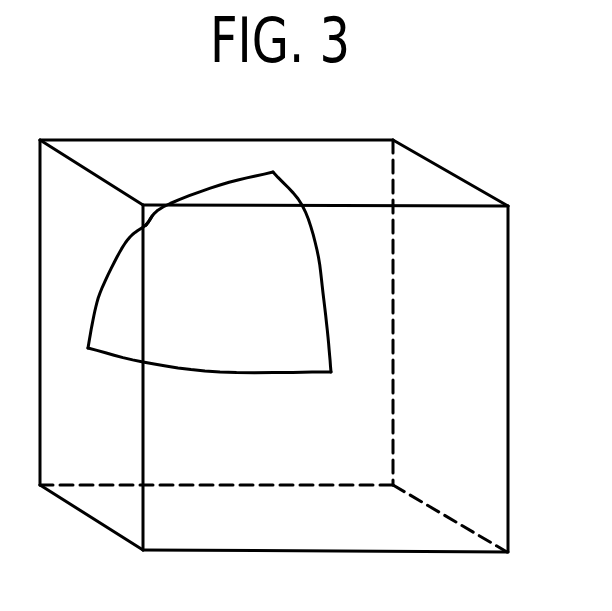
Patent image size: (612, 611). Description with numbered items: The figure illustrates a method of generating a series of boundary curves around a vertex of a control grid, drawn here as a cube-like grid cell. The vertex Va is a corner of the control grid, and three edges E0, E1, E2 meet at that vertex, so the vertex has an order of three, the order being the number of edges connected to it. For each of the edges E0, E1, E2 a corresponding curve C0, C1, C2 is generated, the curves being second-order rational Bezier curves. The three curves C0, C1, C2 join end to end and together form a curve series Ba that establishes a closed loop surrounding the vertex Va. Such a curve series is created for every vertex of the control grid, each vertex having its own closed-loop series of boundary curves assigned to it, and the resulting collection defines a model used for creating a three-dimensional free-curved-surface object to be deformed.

The edge E0 is at (433, 208).
The edge E1 is at (90, 168).
The edge E2 is at (161, 377).
The vertex of a control grid Va is at (131, 218).
The series of boundary curves Ba is at (209, 241).
The curve C0 is at (302, 272).
The curve C1 is at (111, 286).
The curve C2 is at (209, 381).